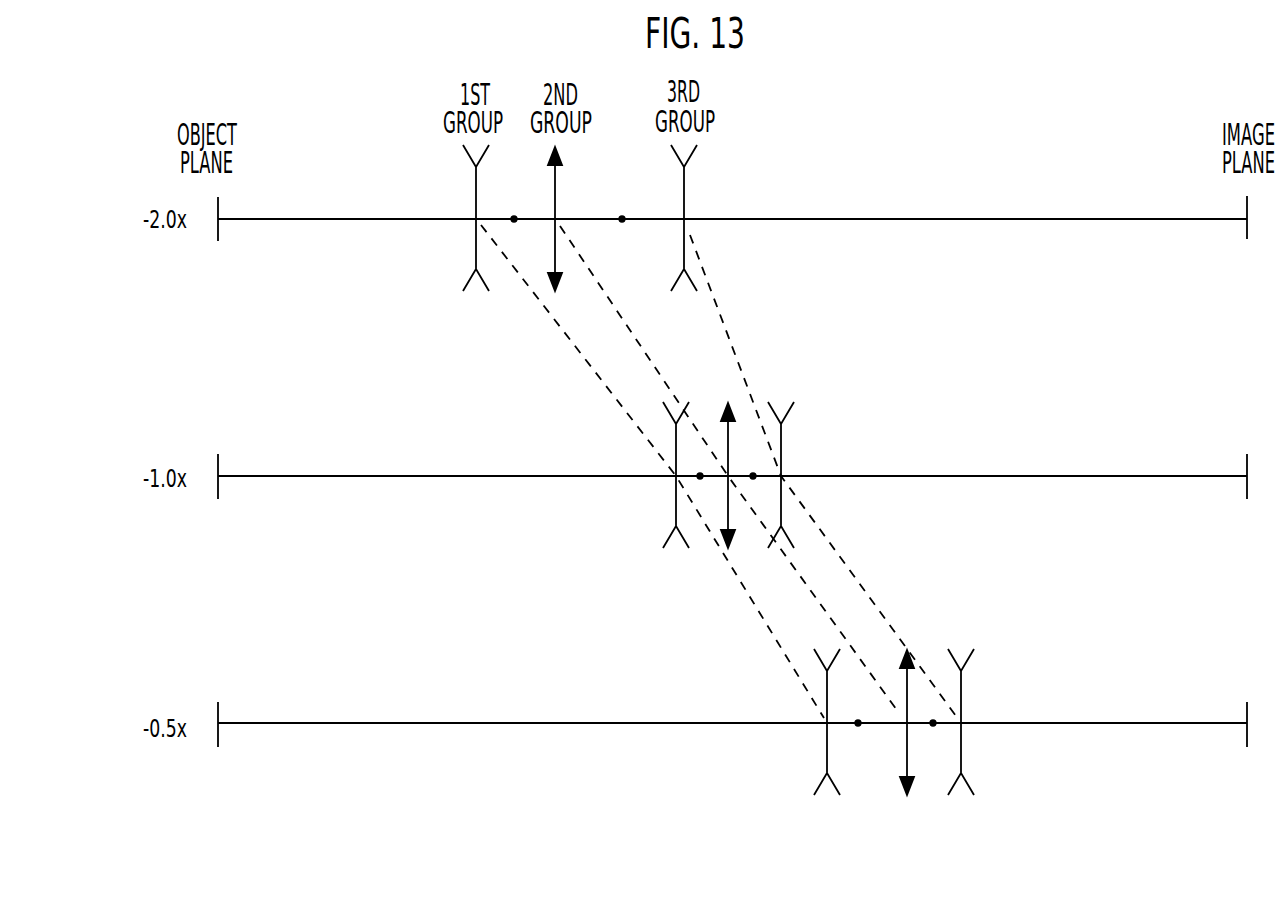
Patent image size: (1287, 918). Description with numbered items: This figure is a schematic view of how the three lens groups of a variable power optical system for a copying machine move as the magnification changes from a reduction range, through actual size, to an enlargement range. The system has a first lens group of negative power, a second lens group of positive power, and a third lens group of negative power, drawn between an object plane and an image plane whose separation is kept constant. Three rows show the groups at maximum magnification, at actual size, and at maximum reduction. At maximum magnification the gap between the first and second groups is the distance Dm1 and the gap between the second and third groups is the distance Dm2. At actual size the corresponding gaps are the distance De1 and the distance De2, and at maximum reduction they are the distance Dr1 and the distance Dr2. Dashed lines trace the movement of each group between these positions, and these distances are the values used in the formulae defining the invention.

The distance between first and second lens groups at maximum magnification Dm1 is at (514, 221).
The distance between second and third lens groups at maximum magnification Dm2 is at (622, 221).
The distance between first and second lens groups at actual size De1 is at (700, 478).
The distance between second and third lens groups at actual size De2 is at (753, 478).
The distance between first and second lens groups at maximum reduction Dr1 is at (858, 725).
The distance between second and third lens groups at maximum reduction Dr2 is at (933, 725).